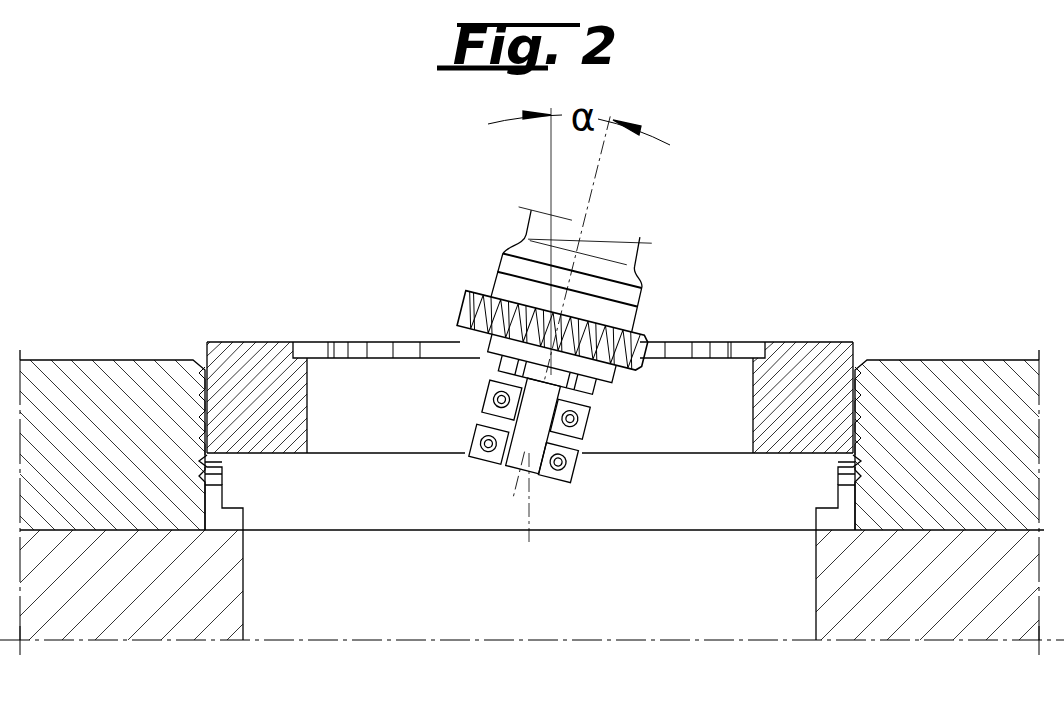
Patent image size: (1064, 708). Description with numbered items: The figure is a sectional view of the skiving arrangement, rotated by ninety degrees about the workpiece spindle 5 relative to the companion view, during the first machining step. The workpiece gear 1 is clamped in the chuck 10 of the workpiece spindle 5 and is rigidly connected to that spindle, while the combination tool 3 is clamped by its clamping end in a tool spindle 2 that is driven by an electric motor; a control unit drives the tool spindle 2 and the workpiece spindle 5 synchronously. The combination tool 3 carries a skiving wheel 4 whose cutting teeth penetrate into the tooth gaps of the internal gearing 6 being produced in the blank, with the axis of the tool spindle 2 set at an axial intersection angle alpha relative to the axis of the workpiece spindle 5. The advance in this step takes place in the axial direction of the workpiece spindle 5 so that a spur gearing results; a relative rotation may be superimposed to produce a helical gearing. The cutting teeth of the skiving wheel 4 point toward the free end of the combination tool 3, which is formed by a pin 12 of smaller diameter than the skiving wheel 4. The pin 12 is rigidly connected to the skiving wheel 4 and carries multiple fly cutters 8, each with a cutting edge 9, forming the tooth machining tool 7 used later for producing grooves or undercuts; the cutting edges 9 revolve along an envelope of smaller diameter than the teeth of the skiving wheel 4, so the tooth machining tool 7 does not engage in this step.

The workpiece gear 1 is at (532, 416).
The tool spindle 2 is at (612, 242).
The combination tool 3 is at (522, 351).
The skiving wheel 4 is at (480, 312).
The workpiece spindle 5 is at (958, 340).
The internal gearing 6 is at (717, 352).
The tooth machining tool 7 is at (550, 475).
The fly cutter 8 is at (495, 386).
The cutting edge 9 is at (476, 432).
The chuck 10 is at (532, 592).
The pin 12 is at (510, 462).